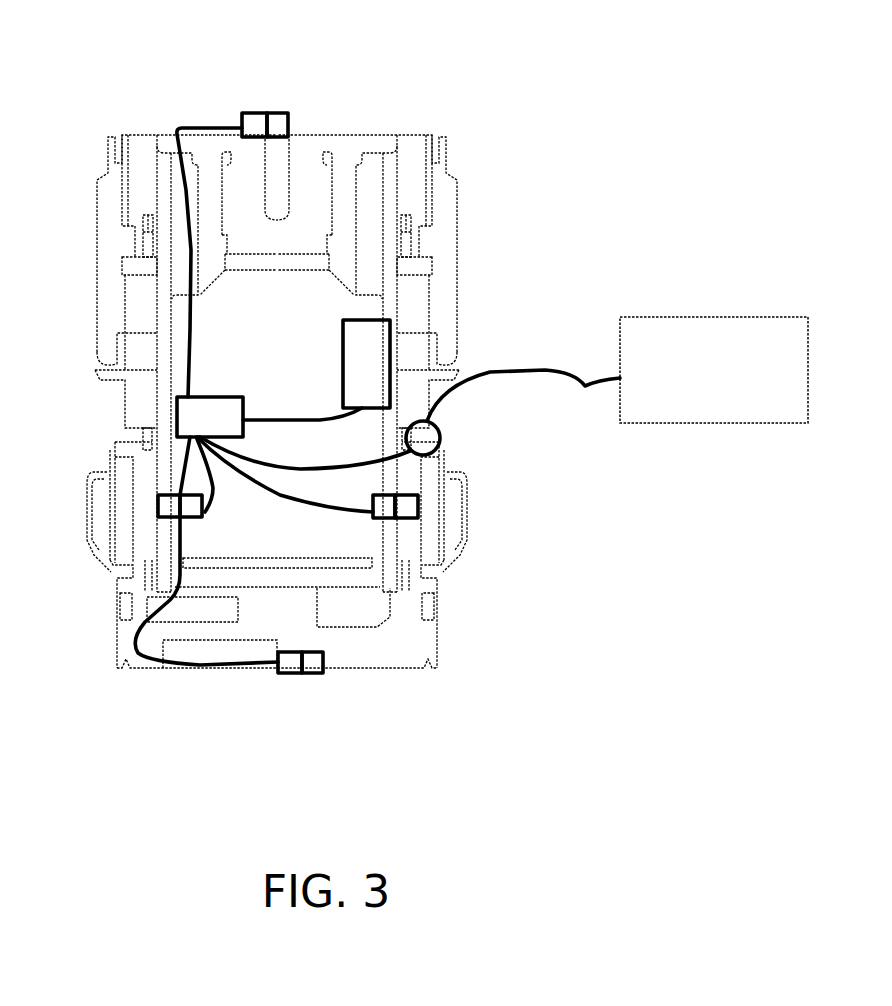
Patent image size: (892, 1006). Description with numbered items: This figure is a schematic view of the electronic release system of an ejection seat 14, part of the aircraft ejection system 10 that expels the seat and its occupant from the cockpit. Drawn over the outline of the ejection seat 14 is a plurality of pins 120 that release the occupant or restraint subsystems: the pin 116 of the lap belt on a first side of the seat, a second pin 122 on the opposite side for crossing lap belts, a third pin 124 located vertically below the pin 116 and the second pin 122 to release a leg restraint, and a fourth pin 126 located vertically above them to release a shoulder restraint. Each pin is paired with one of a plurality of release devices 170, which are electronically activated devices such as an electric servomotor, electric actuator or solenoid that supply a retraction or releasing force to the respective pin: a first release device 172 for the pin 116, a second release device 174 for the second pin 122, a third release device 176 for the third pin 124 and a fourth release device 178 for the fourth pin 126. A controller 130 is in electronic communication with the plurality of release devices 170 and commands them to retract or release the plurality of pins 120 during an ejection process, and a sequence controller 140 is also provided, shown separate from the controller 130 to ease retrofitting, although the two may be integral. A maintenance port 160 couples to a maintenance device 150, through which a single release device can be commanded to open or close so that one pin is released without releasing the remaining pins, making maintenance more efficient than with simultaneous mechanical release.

The aircraft ejection system 10 is at (523, 107).
The ejection seat 14 is at (571, 157).
The pin 116 is at (158, 507).
The plurality of pins 120 is at (277, 120).
The second pin 122 is at (418, 507).
The third pin 124 is at (310, 673).
The fourth pin 126 is at (280, 123).
The controller 130 is at (195, 428).
The sequence controller 140 is at (351, 371).
The maintenance device 150 is at (696, 418).
The maintenance port 160 is at (427, 442).
The plurality of release devices 170 is at (242, 121).
The first release device 172 is at (190, 508).
The second release device 174 is at (388, 510).
The third release device 176 is at (295, 673).
The fourth release device 178 is at (253, 120).